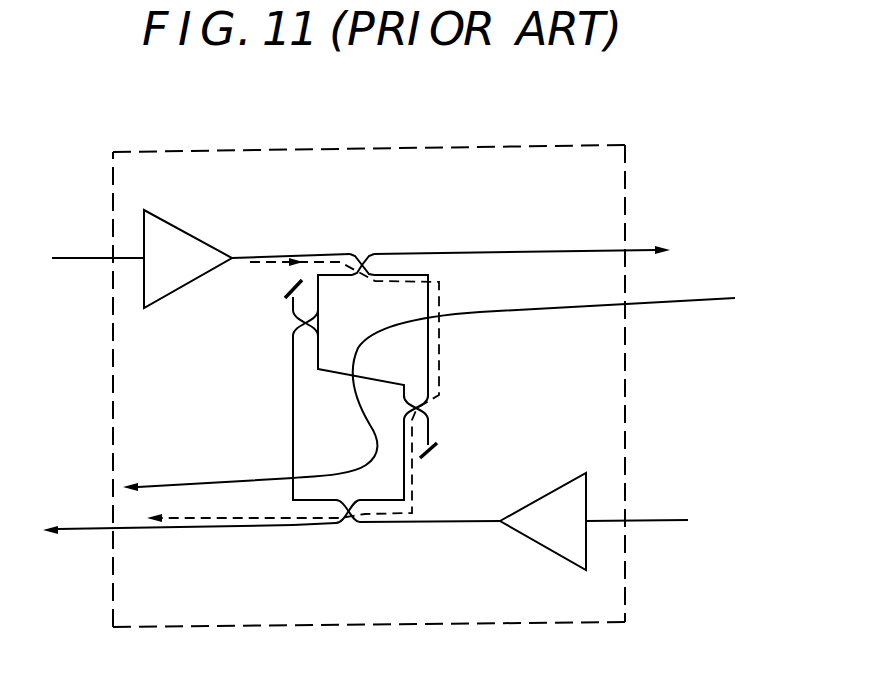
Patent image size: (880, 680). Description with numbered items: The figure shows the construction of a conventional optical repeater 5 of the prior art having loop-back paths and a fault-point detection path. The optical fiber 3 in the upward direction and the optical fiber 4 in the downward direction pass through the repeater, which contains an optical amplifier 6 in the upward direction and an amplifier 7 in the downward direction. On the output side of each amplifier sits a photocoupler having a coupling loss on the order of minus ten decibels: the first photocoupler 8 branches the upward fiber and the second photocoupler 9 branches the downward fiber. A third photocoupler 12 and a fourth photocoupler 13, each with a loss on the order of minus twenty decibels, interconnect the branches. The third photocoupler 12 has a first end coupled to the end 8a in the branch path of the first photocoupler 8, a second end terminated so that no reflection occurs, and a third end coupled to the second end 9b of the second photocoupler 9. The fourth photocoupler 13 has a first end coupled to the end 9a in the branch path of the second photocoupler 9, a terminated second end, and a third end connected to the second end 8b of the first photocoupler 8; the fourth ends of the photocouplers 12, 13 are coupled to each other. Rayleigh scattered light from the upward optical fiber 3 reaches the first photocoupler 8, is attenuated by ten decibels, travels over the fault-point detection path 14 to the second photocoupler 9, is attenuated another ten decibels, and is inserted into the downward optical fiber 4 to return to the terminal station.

The optical fiber in the upward direction 3 is at (78, 260).
The optical fiber in the downward direction 4 is at (671, 520).
The optical repeater 5 is at (568, 144).
The optical amplifier in the upward direction 6 is at (195, 236).
The amplifier in the downward direction 7 is at (562, 483).
The first photocoupler 8 is at (380, 261).
The end in the branch path of the first photocoupler 8a is at (372, 279).
The second end of the first photocoupler 8b is at (350, 261).
The second photocoupler 9 is at (360, 509).
The end in the branch path of the second photocoupler 9a is at (302, 530).
The second end of the second photocoupler 9b is at (372, 500).
The third photocoupler 12 is at (424, 412).
The fourth photocoupler 13 is at (285, 324).
The fault-point detection path 14 is at (399, 371).